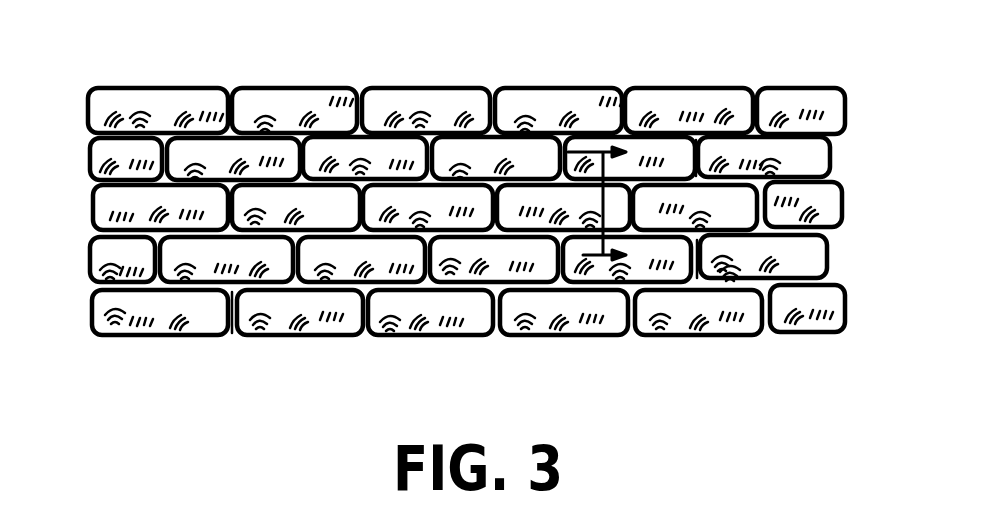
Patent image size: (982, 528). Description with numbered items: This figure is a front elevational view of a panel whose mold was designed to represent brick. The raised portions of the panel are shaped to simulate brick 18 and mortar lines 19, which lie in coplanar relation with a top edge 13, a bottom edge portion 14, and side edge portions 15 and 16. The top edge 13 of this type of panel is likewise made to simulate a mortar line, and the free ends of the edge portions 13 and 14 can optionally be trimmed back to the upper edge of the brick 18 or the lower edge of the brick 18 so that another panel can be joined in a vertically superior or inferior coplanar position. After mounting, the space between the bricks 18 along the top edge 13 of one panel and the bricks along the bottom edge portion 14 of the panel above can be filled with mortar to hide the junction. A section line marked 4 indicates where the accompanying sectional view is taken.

The top edge 13 is at (426, 88).
The bottom edge portion 14 is at (452, 327).
The side edge portion 15 is at (842, 206).
The side edge portion 16 is at (93, 213).
The brick 18 is at (512, 158).
The mortar lines 19 is at (702, 173).
The section line 4- 4 is at (606, 206).